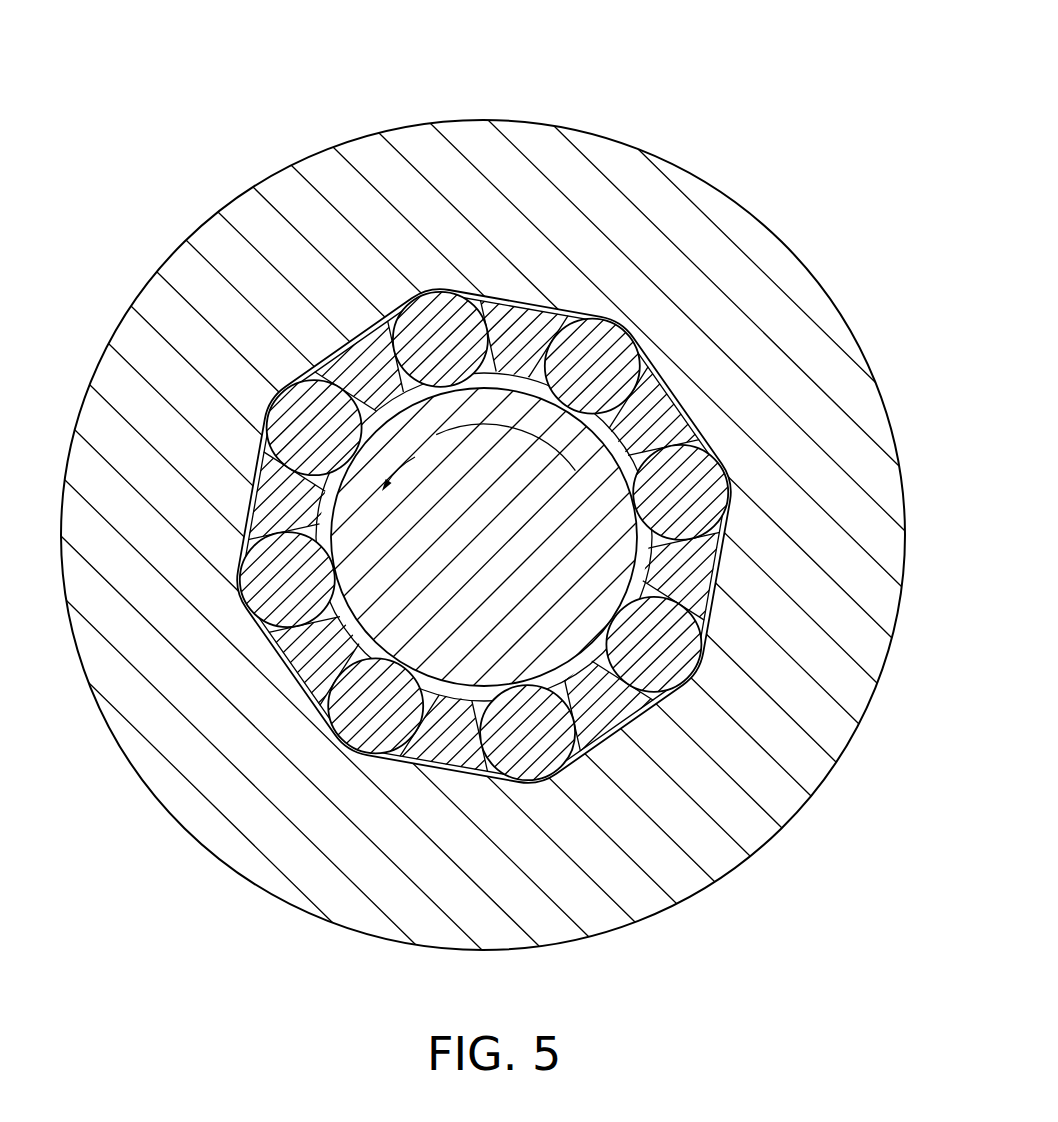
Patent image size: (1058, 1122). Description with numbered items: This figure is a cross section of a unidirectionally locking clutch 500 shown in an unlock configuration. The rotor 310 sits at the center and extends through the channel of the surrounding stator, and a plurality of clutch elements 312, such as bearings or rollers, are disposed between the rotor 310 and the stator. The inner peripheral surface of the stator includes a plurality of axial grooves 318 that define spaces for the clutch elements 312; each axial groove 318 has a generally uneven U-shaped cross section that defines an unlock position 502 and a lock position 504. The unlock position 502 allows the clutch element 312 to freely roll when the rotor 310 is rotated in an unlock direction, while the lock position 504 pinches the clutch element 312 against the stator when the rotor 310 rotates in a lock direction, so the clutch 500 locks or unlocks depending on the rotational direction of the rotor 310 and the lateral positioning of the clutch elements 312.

The unidirectionally locking clutch 500 is at (700, 117).
The unlock position 502 is at (485, 488).
The lock position 504 is at (503, 293).
The clutch element 312 is at (417, 317).
The axial groove 318 is at (466, 293).
The rotor 310 is at (500, 650).